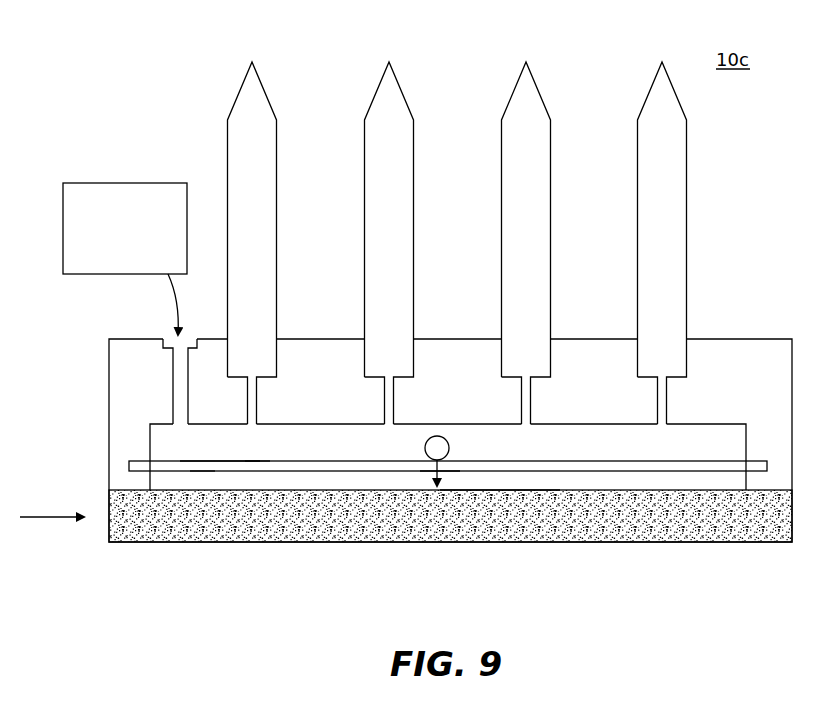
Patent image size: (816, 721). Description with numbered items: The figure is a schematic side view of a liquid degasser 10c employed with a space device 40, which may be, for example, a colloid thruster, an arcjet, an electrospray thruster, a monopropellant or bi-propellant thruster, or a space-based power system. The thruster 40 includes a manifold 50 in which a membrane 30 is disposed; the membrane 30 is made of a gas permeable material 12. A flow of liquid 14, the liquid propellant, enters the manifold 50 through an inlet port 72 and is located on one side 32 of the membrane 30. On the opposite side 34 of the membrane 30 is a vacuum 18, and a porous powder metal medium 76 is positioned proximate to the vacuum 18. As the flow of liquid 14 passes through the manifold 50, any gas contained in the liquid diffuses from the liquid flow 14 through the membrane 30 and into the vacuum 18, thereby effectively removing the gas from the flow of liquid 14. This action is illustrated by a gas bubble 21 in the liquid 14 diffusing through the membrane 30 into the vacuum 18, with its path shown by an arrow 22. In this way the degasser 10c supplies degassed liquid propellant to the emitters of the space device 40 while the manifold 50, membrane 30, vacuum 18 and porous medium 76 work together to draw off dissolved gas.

The liquid degasser 10c is at (361, 454).
The gas permeable material 12 is at (129, 467).
The flow of liquid 14 is at (97, 183).
The vacuum 18 is at (523, 475).
The gas bubble 21 is at (449, 447).
The arrow 22 is at (440, 480).
The membrane 30 is at (257, 466).
The side of membrane 32 is at (188, 461).
The side of membrane 34 is at (203, 472).
The space device 40 is at (206, 86).
The manifold 50 is at (118, 374).
The inlet port 72 is at (170, 333).
The porous powder metal medium 76 is at (380, 518).